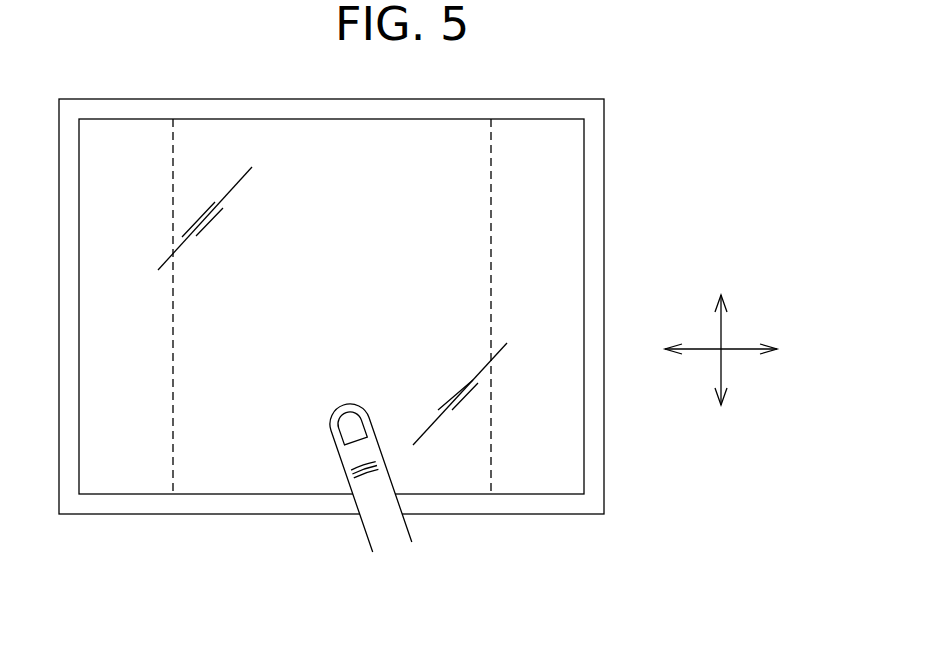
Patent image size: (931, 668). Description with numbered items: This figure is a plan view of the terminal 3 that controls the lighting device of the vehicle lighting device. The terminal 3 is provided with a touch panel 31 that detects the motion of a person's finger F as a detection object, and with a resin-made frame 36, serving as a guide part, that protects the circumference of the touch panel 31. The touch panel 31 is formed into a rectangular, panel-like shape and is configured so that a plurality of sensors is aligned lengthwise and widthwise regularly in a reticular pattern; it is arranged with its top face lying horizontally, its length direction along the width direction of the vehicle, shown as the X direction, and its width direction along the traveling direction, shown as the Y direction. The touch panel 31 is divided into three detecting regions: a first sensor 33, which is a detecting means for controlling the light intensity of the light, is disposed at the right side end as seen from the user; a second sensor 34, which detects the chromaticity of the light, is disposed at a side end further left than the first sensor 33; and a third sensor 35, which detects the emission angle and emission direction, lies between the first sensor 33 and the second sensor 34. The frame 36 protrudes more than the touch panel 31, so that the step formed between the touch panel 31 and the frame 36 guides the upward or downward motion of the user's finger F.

The terminal 3 is at (604, 143).
The frame 36 is at (594, 195).
The touch panel 31 is at (783, 540).
The first sensor 33 is at (556, 313).
The second sensor 34 is at (141, 313).
The third sensor 35 is at (349, 313).
The finger F is at (363, 535).
The X direction X is at (742, 349).
The Y direction Y is at (721, 323).